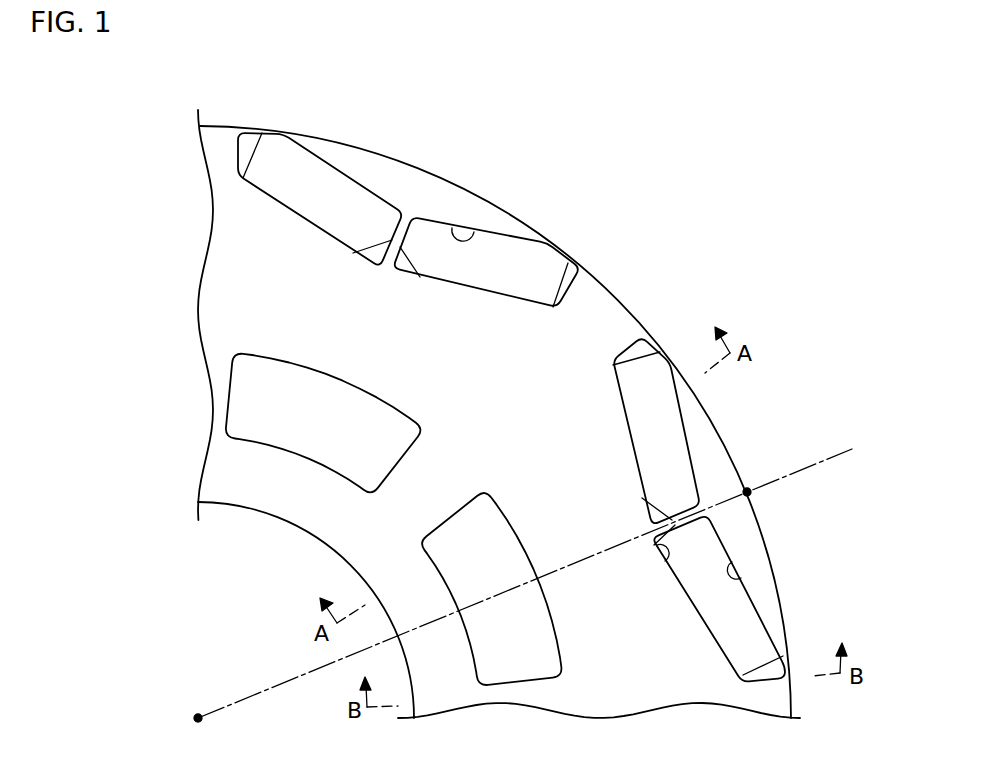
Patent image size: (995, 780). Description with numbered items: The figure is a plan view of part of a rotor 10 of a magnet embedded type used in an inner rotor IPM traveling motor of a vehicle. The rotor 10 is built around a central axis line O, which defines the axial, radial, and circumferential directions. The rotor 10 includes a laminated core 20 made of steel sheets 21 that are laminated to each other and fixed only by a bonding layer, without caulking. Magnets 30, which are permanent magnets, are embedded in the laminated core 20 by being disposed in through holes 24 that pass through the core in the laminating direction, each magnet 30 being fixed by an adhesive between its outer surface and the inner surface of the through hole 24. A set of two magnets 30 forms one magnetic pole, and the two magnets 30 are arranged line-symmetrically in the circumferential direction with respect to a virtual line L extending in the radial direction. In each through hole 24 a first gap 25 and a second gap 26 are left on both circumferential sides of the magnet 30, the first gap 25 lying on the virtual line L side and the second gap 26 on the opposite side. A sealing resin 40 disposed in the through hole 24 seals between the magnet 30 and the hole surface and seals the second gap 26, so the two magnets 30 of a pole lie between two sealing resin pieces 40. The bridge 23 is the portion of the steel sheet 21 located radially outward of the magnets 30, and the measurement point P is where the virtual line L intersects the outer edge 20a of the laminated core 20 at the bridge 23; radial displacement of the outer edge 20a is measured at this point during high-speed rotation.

The rotor 10 is at (797, 180).
The laminated core 20 is at (176, 303).
The outer edge 20a is at (222, 126).
The steel sheet 21 is at (230, 460).
The bridge 23 is at (368, 162).
The through hole 24 is at (452, 228).
The first gap 25 is at (675, 568).
The second gap 26 is at (755, 673).
The magnet 30 is at (292, 163).
The sealing resin 40 is at (243, 148).
The virtual line L is at (828, 465).
The measurement point P is at (749, 490).
The central axis line O is at (196, 718).